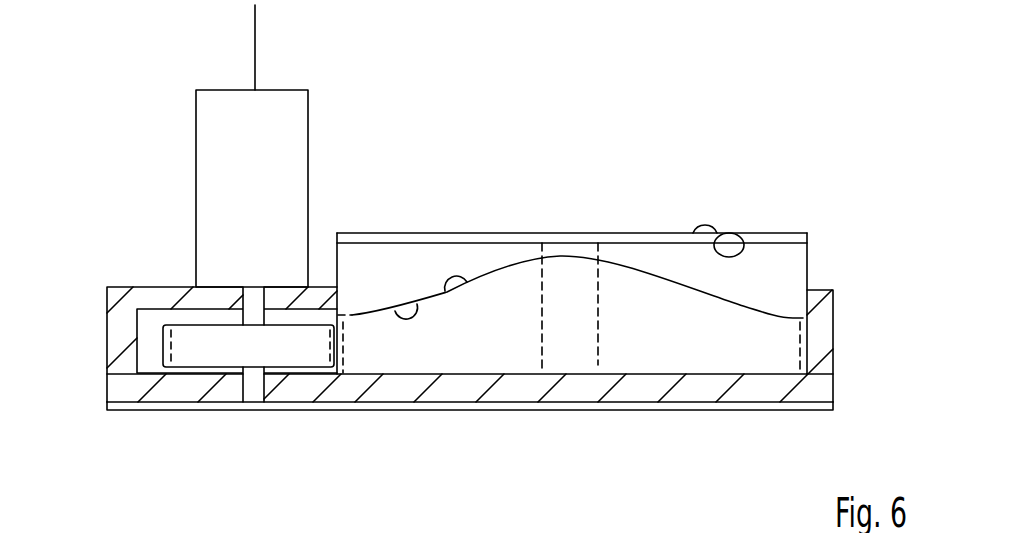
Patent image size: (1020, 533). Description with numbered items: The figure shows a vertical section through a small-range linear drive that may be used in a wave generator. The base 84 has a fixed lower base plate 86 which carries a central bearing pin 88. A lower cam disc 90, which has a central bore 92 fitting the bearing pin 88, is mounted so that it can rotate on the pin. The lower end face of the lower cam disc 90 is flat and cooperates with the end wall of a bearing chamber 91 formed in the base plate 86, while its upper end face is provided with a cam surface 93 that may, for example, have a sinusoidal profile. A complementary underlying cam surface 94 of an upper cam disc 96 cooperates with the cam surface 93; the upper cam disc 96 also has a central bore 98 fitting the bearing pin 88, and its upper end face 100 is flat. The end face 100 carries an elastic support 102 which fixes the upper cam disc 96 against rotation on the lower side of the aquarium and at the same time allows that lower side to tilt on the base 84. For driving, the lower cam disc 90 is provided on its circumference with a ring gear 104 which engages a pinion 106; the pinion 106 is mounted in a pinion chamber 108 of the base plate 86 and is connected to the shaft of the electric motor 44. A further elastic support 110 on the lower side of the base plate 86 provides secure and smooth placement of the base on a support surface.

The electric motor 44 is at (213, 160).
The base 84 is at (690, 128).
The lower base plate 86 is at (507, 385).
The bearing pin 88 is at (560, 348).
The lower cam disc 90 is at (650, 348).
The bearing chamber 91 is at (803, 345).
The central bore 92 is at (599, 280).
The cam surface 93 is at (448, 288).
The cam surface 94 is at (418, 302).
The upper cam disc 96 is at (475, 260).
The central bore 98 is at (543, 256).
The upper end face 100 is at (743, 243).
The elastic support 102 is at (775, 237).
The ring gear 104 is at (342, 330).
The pinion 106 is at (300, 347).
The pinion chamber 108 is at (180, 370).
The elastic support 110 is at (141, 412).